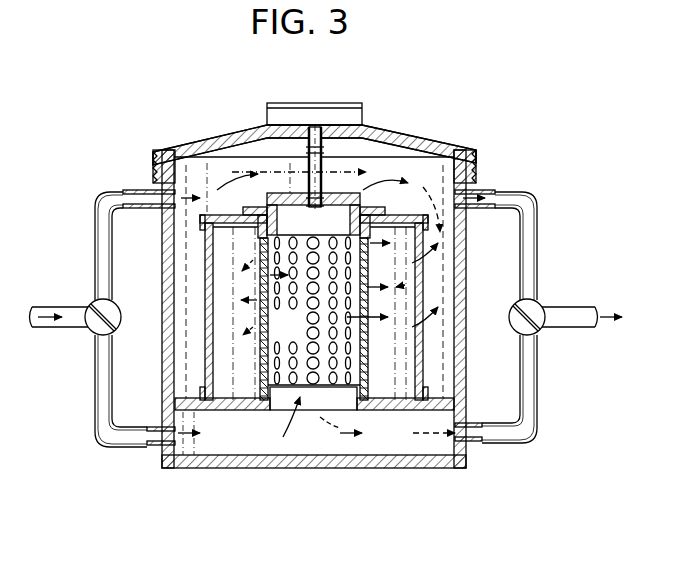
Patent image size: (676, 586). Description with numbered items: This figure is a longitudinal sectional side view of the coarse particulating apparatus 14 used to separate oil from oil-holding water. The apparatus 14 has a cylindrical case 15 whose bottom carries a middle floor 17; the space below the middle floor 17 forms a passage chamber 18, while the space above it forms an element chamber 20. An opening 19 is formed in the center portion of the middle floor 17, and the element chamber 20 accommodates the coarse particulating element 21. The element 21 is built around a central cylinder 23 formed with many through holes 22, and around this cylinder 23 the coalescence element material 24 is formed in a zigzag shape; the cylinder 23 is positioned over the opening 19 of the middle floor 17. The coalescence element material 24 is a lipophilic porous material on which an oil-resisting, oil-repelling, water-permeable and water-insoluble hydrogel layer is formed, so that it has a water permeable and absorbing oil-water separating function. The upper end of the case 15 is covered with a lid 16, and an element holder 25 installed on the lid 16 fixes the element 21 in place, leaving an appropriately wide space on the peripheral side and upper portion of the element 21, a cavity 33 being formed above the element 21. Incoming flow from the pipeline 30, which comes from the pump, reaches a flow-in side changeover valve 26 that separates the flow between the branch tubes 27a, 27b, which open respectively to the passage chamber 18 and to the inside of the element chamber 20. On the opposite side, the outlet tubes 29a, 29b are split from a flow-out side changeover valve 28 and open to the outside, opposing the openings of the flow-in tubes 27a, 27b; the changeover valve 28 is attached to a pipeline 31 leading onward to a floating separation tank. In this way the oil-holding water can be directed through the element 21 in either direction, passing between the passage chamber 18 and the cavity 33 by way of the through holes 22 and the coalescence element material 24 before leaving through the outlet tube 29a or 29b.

The coarse particulating apparatus 14 is at (191, 147).
The cylindrical case 15 is at (467, 240).
The lid 16 is at (248, 134).
The middle floor 17 is at (236, 412).
The passage chamber 18 is at (268, 445).
The opening 19 is at (346, 412).
The element chamber 20 is at (447, 162).
The coarse particulating element 21 is at (425, 277).
The through holes 22 is at (312, 303).
The cylinder 23 is at (371, 366).
The coalescence element material 24 is at (412, 343).
The element holder 25 is at (310, 280).
The changeover valve 26 is at (97, 303).
The branch tube 27a is at (100, 423).
The branch tube 27b is at (100, 218).
The changeover valve 28 is at (542, 299).
The outlet tube 29a is at (521, 202).
The outlet tube 29b is at (528, 412).
The pipeline 30 is at (47, 330).
The pipeline 31 is at (577, 330).
The cavity 33 is at (279, 162).